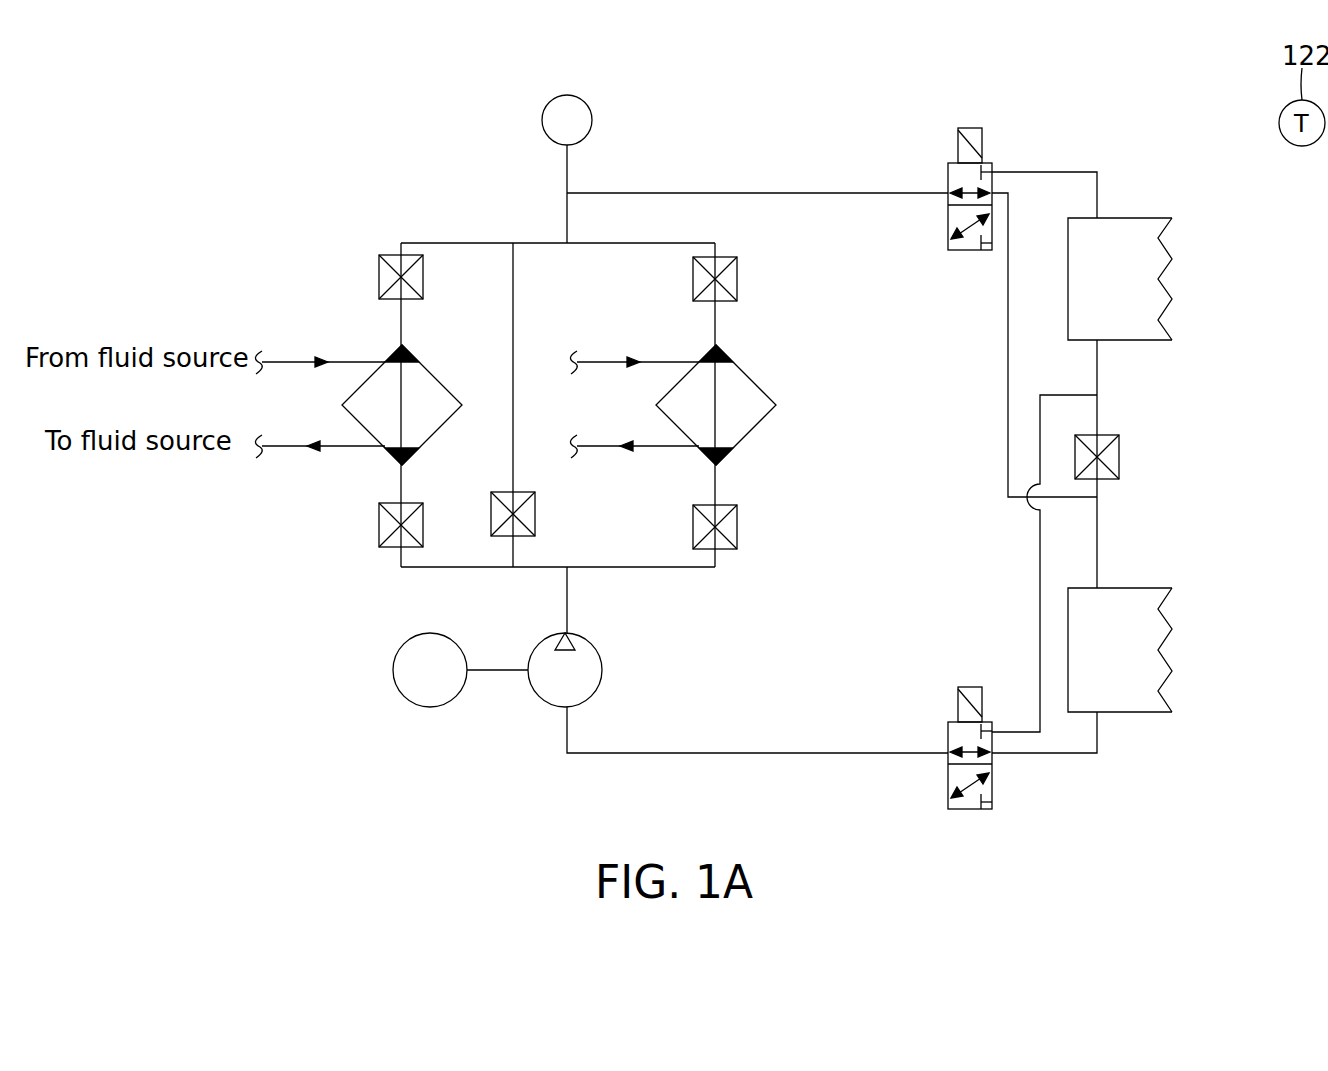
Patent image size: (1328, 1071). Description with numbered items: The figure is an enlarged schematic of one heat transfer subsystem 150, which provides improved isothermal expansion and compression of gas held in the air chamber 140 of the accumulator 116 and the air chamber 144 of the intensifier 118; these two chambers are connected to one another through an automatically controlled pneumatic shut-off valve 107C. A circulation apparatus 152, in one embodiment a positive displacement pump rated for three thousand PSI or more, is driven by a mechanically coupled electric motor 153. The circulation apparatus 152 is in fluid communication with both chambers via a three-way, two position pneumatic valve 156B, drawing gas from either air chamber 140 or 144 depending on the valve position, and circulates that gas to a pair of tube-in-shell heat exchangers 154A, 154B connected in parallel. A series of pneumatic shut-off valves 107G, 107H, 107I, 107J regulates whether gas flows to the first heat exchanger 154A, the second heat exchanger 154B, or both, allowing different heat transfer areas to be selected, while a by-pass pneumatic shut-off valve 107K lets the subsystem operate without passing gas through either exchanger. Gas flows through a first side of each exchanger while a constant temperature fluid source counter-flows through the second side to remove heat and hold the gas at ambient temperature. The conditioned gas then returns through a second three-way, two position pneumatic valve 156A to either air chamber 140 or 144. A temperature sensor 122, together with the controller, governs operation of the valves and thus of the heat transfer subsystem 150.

The heat transfer subsystem 150 is at (226, 83).
The temperature sensor 122 is at (567, 95).
The pneumatic shut-off valve 107G is at (378, 277).
The pneumatic shut-off valve 107H is at (378, 525).
The pneumatic shut-off valve 107I is at (739, 277).
The pneumatic shut-off valve 107J is at (739, 527).
The by-pass pneumatic shut-off valve 107K is at (537, 513).
The pneumatic shut-off valve 107C is at (1120, 457).
The first heat exchanger 154A is at (396, 348).
The second heat exchanger 154B is at (710, 348).
The circulation apparatus 152 is at (604, 670).
The electric motor 153 is at (393, 670).
The three-way, two position pneumatic valve 156A is at (948, 163).
The three-way, two position pneumatic valve 156B is at (947, 722).
The air chamber of the intensifier 144 is at (1133, 234).
The air chamber of the accumulator 140 is at (1133, 606).
The intensifier 118 is at (1135, 342).
The accumulator 116 is at (1135, 714).